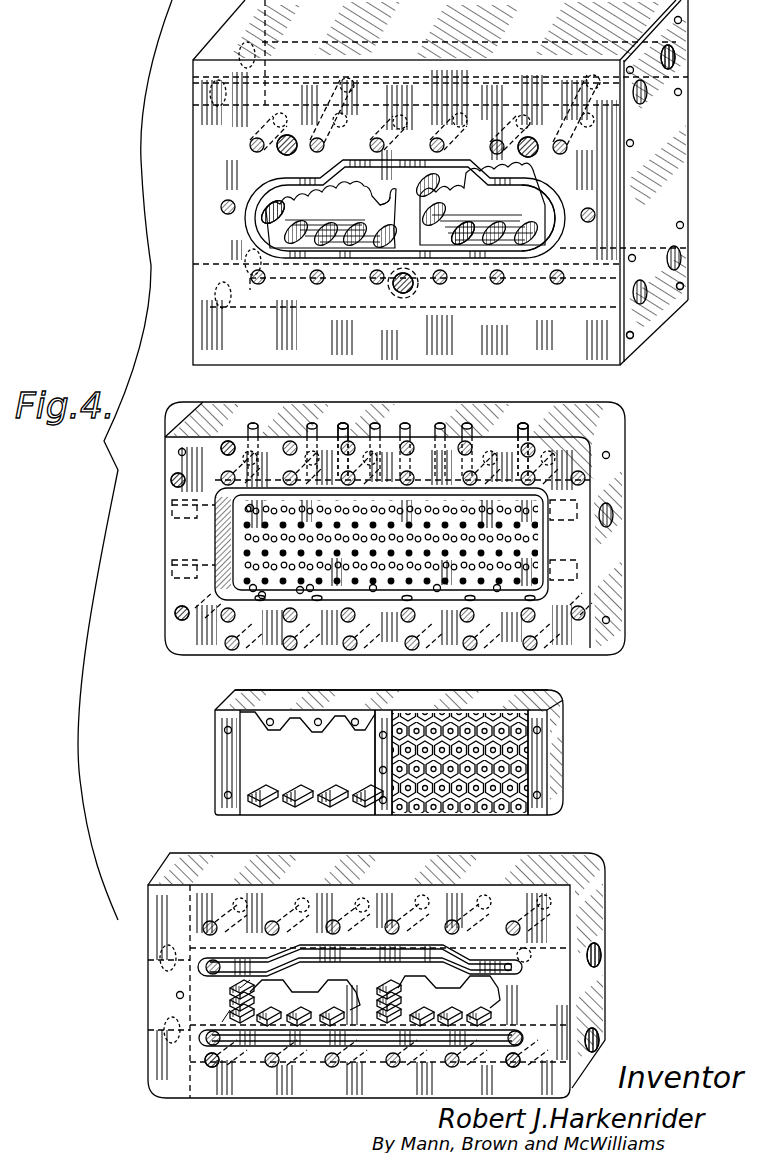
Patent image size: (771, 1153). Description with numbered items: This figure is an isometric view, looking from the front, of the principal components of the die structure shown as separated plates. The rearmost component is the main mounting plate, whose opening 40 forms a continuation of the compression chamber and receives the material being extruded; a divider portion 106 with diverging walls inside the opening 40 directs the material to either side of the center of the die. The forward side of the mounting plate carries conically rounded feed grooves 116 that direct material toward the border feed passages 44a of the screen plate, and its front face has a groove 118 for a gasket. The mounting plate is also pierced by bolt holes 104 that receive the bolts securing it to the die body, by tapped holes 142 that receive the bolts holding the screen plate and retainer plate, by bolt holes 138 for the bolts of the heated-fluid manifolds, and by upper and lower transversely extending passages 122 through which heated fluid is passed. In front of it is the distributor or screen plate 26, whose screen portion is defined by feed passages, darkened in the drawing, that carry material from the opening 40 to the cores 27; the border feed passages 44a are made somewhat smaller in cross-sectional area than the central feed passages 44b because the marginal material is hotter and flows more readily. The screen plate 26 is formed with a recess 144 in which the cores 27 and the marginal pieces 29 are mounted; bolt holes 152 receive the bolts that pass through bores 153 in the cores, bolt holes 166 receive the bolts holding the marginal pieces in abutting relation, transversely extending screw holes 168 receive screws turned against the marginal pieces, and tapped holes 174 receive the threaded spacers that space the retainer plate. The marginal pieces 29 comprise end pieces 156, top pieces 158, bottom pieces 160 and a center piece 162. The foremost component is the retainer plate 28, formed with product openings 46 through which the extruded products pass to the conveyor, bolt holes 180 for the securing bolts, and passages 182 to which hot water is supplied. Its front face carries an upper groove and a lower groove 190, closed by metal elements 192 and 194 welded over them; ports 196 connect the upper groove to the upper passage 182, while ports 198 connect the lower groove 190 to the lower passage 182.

The screen plate 26 is at (598, 476).
The core 27 is at (688, 150).
The retainer plate 28 is at (592, 922).
The marginal pieces 29 is at (561, 743).
The opening 40 is at (462, 192).
The border feed passages 44a is at (372, 522).
The central feed passages 44b is at (290, 530).
The openings 46 is at (508, 1001).
The bolt holes 104 is at (282, 152).
The divider portion 106 is at (405, 235).
The feed grooves 116 is at (268, 236).
The groove 118 is at (565, 235).
The passages 122 is at (668, 45).
The bolt holes 138 is at (680, 292).
The tapped holes 142 is at (224, 205).
The recess 144 is at (215, 505).
The bolt holes 152 is at (255, 578).
The bores 153 is at (412, 718).
The end pieces 156 is at (215, 780).
The top pieces 158 is at (292, 700).
The bottom pieces 160 is at (278, 815).
The center piece 162 is at (384, 815).
The bolt holes 166 is at (252, 504).
The screw holes 168 is at (407, 425).
The tapped holes 174 is at (224, 448).
The bolt holes 180 is at (340, 924).
The passages 182 is at (602, 960).
The lower groove 190 is at (480, 1065).
The metal element 192 is at (412, 950).
The metal element 194 is at (450, 1065).
The ports 196 is at (530, 956).
The ports 198 is at (218, 1068).